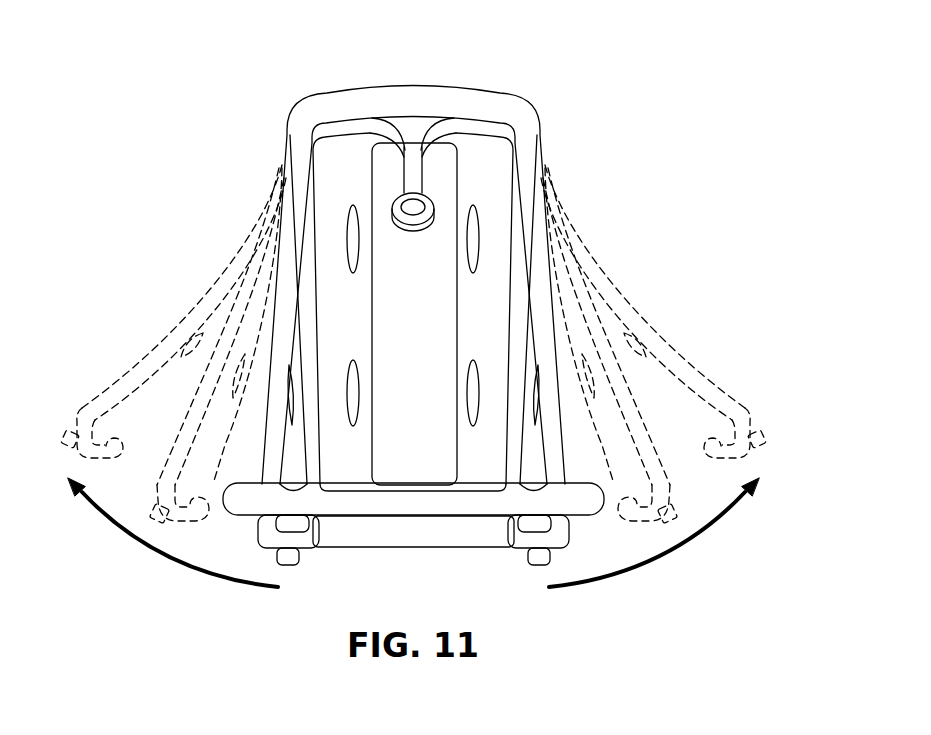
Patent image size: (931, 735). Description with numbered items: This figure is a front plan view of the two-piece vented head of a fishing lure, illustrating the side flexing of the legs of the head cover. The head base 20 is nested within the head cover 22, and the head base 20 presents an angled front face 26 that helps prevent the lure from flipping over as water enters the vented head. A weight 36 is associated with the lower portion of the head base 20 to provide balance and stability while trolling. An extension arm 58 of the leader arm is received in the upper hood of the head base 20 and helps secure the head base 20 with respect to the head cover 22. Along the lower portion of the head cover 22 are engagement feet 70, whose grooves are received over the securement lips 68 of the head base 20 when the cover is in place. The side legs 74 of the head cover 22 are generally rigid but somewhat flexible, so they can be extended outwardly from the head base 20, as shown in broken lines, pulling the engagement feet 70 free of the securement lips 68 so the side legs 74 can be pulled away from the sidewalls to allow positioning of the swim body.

The head base 20 is at (298, 155).
The head cover 22 is at (583, 198).
The angled front face 26 is at (240, 498).
The weight 36 is at (358, 545).
The extension arm 58 is at (412, 128).
The securement lips 68 is at (517, 520).
The engagement feet 70 is at (750, 412).
The side legs 74 is at (622, 302).